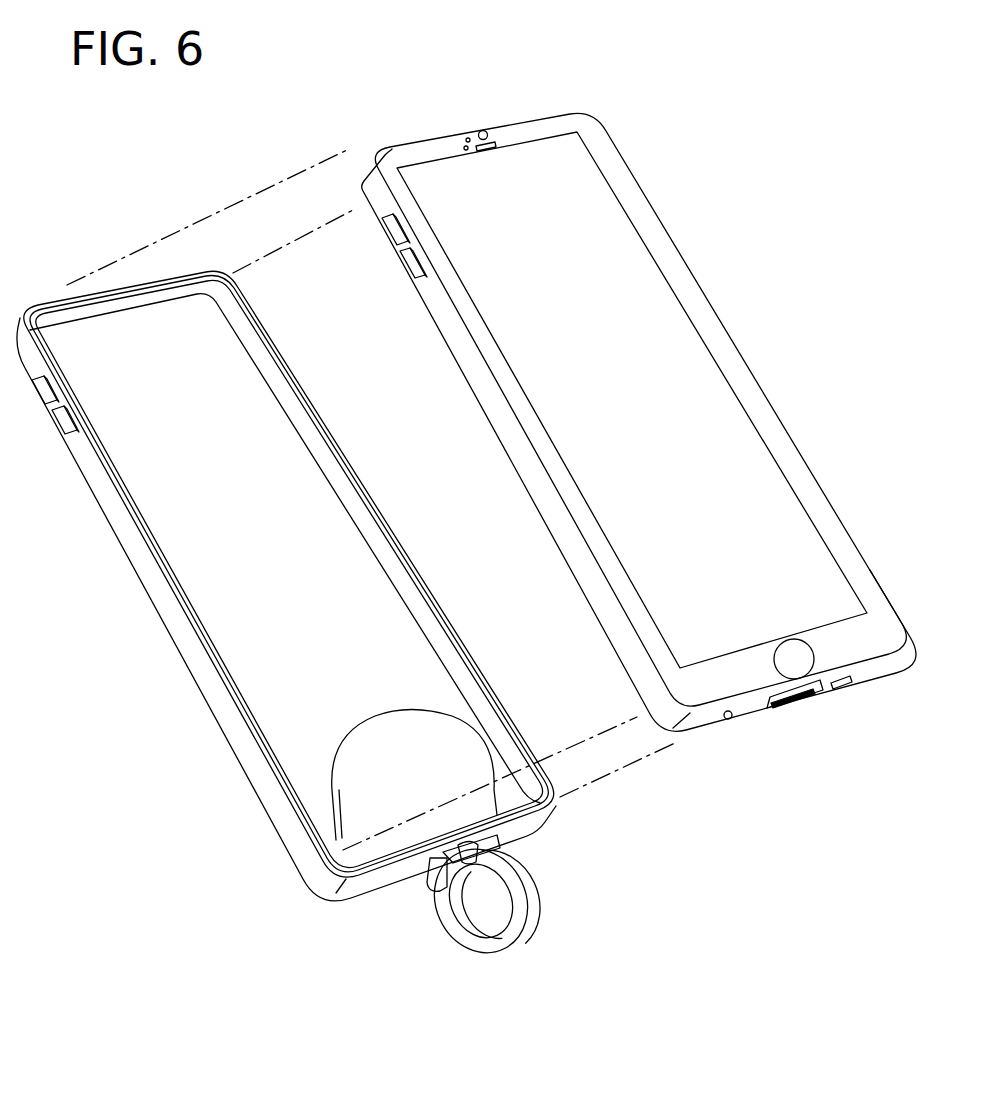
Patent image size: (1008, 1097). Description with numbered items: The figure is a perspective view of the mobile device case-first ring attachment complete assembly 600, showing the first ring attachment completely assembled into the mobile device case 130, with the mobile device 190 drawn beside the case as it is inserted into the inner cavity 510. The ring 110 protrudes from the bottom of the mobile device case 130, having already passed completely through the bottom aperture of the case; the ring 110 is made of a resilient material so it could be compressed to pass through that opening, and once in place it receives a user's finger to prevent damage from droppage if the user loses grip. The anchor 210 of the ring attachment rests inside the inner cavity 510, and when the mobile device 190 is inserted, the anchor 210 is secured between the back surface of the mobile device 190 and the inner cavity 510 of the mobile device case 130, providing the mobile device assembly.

The ring 110 is at (528, 905).
The mobile device case 130 is at (125, 555).
The mobile device 190 is at (720, 325).
The anchor 210 is at (432, 785).
The mobile device case inner cavity 510 is at (258, 512).
The mobile device case-first ring attachment complete assembly 600 is at (146, 645).